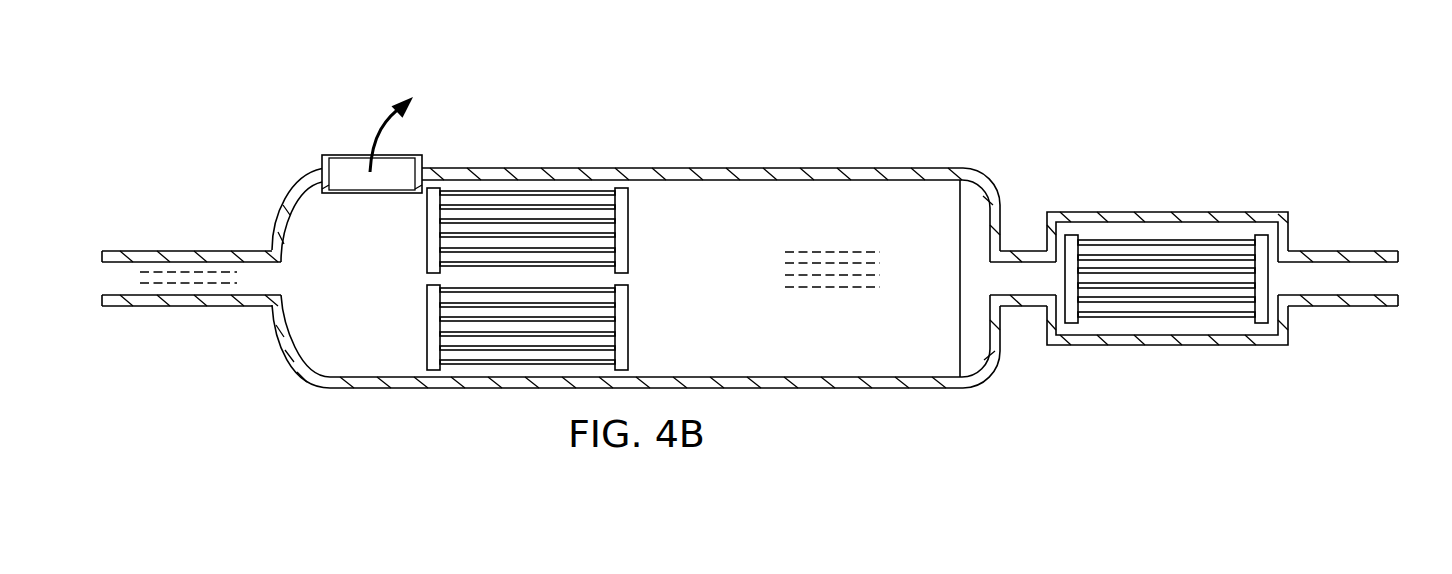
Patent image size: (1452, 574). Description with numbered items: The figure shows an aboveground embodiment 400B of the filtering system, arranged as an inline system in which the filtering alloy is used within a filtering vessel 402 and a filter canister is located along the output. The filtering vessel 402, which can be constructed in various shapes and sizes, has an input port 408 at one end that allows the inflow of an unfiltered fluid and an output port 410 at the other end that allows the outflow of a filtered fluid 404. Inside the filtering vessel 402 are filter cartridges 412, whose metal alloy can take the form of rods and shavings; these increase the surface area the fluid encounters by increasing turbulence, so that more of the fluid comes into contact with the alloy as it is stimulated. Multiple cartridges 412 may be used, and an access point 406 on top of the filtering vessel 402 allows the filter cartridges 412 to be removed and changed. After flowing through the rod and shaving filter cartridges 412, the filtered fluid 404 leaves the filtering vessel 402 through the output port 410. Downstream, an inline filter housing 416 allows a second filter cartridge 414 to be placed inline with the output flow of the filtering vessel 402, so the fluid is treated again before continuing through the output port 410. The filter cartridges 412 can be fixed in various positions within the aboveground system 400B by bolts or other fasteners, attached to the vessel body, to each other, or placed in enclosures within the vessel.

The aboveground embodiment 400B is at (1043, 115).
The filtering vessel 402 is at (722, 167).
The filtered fluid 404 is at (830, 252).
The access point 406 is at (375, 133).
The input port 408 is at (102, 279).
The output port 410 is at (1396, 279).
The filter cartridge 412 is at (636, 229).
The second filter cartridge 414 is at (1176, 234).
The inline filter housing 416 is at (1192, 347).